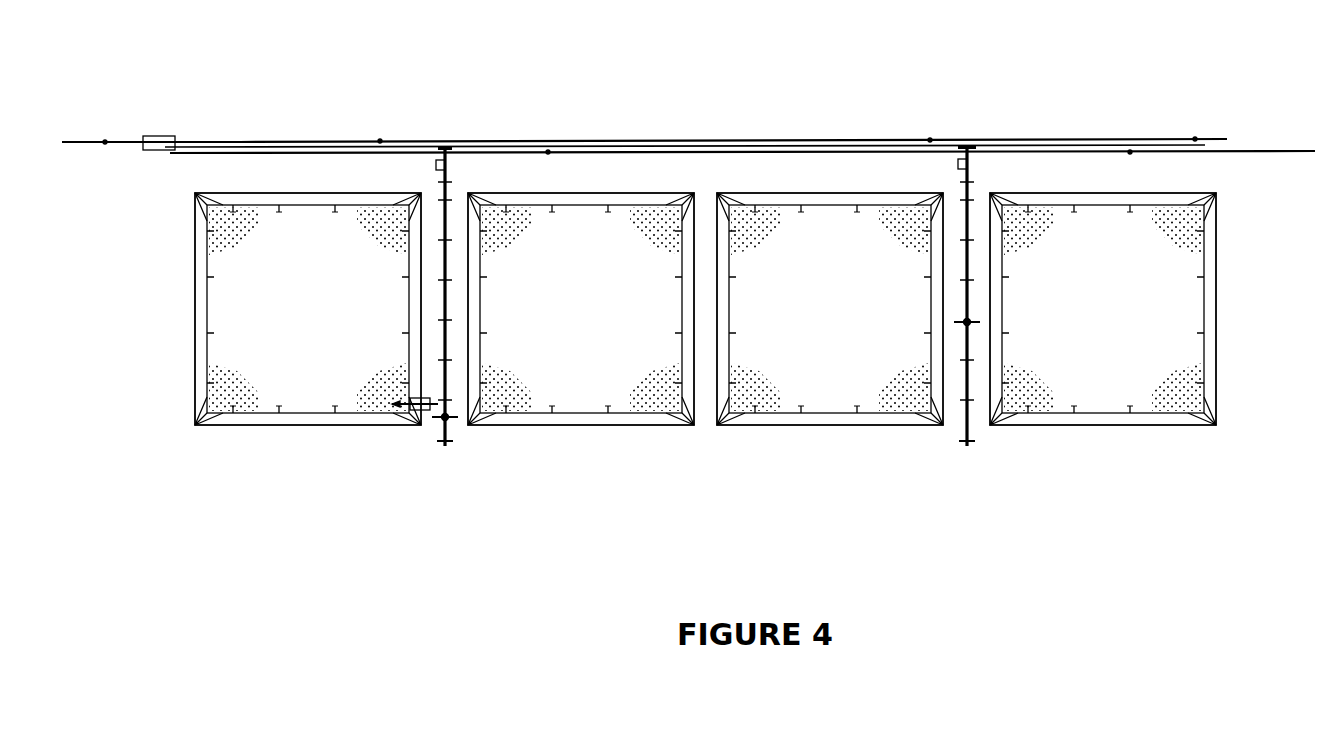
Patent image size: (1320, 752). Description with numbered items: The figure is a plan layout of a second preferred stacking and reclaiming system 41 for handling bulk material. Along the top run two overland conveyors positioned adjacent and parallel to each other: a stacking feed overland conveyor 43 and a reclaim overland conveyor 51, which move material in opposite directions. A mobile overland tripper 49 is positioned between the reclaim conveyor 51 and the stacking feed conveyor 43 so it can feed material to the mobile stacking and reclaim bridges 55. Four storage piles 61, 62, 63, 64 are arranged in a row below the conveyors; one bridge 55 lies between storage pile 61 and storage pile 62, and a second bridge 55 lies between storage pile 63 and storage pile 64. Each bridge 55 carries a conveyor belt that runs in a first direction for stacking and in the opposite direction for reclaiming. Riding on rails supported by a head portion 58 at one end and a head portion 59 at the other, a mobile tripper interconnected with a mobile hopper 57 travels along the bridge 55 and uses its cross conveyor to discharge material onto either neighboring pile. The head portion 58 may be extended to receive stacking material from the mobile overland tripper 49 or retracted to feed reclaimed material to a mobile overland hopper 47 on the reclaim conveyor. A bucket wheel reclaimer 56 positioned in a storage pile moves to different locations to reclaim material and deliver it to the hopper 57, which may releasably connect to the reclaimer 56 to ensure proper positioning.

The stacking and reclaiming system 41 is at (172, 507).
The stacking feed overland conveyor 43 is at (212, 147).
The mobile overland hopper 47 is at (453, 150).
The mobile overland tripper 49 is at (960, 140).
The reclaim overland conveyor 51 is at (350, 142).
The mobile stacking and reclaim bridge 55 is at (458, 298).
The bucket wheel reclaimer 56 is at (412, 402).
The mobile tripper interconnected with a mobile hopper (MTH) 57 is at (450, 415).
The head portion 58 is at (445, 168).
The head portion 59 is at (447, 447).
The storage pile 61 is at (1108, 392).
The storage pile 62 is at (823, 392).
The storage pile 63 is at (585, 392).
The storage pile 64 is at (311, 392).